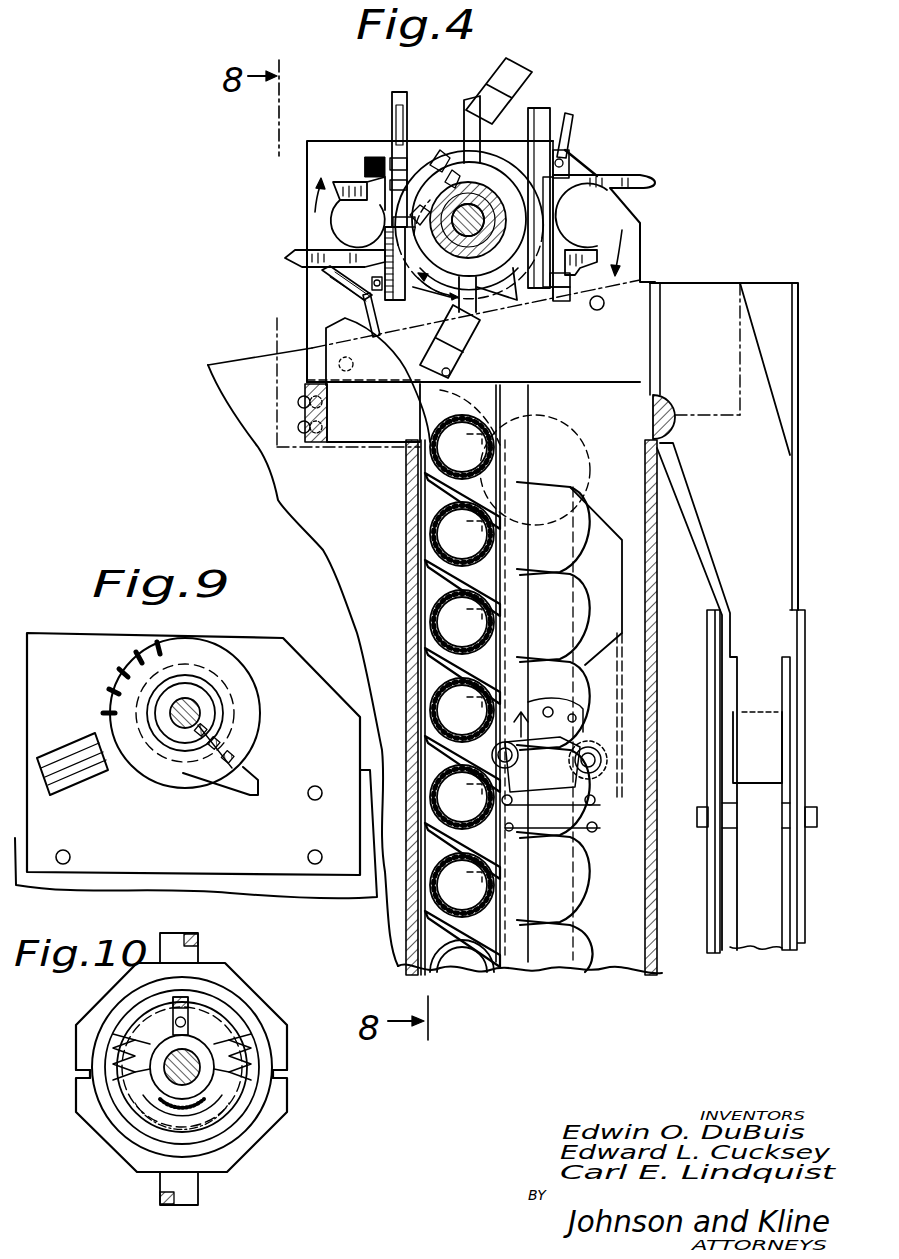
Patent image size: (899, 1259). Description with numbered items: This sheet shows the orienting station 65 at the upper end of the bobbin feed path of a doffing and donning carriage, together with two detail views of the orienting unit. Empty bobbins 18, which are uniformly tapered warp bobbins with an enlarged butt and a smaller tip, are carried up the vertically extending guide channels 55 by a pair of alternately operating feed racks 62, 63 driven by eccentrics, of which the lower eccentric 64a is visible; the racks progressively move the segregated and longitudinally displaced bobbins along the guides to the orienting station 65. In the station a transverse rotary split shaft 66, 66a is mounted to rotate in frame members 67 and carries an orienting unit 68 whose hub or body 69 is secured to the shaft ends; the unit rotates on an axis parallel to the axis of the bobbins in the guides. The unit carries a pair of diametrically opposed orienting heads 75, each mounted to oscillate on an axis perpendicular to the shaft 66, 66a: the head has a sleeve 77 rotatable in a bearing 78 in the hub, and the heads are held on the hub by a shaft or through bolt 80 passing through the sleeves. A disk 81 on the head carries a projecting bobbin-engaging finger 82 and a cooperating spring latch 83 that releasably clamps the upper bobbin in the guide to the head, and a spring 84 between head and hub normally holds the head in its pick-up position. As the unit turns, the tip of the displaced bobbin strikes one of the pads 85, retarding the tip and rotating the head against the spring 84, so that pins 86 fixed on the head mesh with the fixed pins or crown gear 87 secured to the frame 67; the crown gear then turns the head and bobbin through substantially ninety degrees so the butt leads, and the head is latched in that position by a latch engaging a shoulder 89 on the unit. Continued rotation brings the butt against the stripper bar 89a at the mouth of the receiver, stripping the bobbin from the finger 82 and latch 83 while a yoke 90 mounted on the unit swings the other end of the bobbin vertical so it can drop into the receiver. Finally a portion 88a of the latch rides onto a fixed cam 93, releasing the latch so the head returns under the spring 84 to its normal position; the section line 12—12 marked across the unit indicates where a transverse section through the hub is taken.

In FIG. 4, the section line 12- 12 is at (470, 75).
In FIG. 4, the bobbin 18 is at (490, 433).
In FIG. 4, the vertically extending guide channel 55 is at (404, 582).
In FIG. 4, the feed rack 62 is at (585, 590).
In FIG. 4, the feed rack 63 is at (425, 656).
In FIG. 4, the lower eccentric 64a is at (587, 798).
In FIG. 4, the orienting station 65 is at (688, 258).
In FIG. 4, the split shaft 66 is at (566, 208).
In FIG. 9, the split shaft 66a is at (203, 706).
In FIG. 4, the frame member 67 is at (478, 188).
In FIG. 4, the orienting unit 68 is at (360, 112).
In FIG. 4, the hub 69 is at (458, 160).
In FIG. 10, the hub 69 is at (268, 1022).
In FIG. 4, the orienting head 75 is at (318, 152).
In FIG. 10, the sleeve 77 is at (187, 1087).
In FIG. 10, the bearing 78 is at (198, 1047).
In FIG. 10, the through bolt 80 is at (170, 1075).
In FIG. 4, the disk 81 is at (541, 160).
In FIG. 10, the disk 81 is at (272, 1102).
In FIG. 4, the bobbin-engaging finger 82 is at (294, 258).
In FIG. 4, the spring latch 83 is at (350, 186).
In FIG. 10, the spring 84 is at (246, 1104).
In FIG. 9, the pad 85 is at (78, 780).
In FIG. 4, the pin 86 is at (398, 118).
In FIG. 4, the crown gear 87 is at (430, 165).
In FIG. 9, the crown gear 87 is at (114, 690).
In FIG. 4, the latch portion 88a is at (570, 128).
In FIG. 10, the shoulder 89 is at (80, 1072).
In FIG. 4, the stripper bar 89a is at (676, 438).
In FIG. 4, the yoke 90 is at (514, 92).
In FIG. 4, the fixed cam 93 is at (478, 292).
In FIG. 9, the fixed cam 93 is at (262, 758).